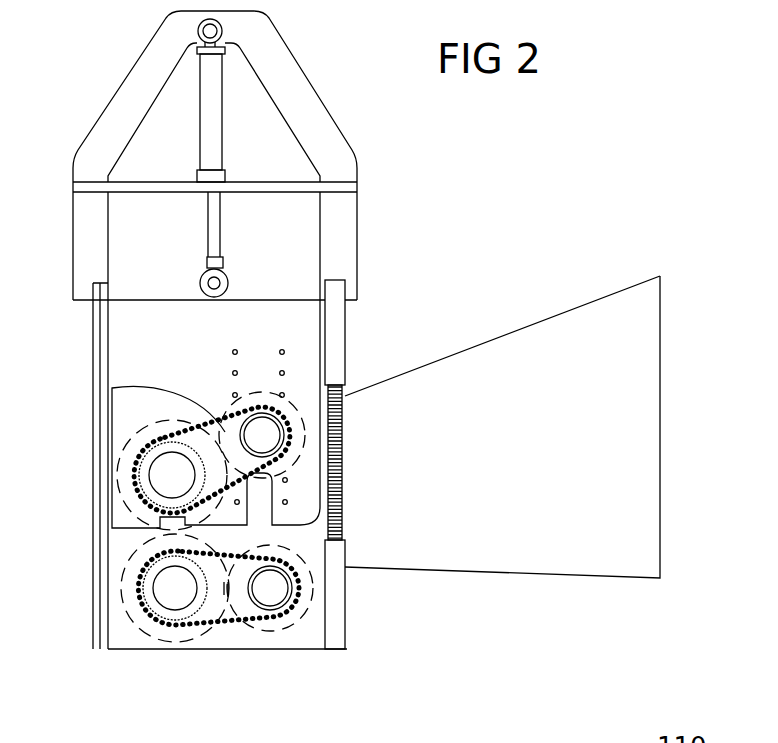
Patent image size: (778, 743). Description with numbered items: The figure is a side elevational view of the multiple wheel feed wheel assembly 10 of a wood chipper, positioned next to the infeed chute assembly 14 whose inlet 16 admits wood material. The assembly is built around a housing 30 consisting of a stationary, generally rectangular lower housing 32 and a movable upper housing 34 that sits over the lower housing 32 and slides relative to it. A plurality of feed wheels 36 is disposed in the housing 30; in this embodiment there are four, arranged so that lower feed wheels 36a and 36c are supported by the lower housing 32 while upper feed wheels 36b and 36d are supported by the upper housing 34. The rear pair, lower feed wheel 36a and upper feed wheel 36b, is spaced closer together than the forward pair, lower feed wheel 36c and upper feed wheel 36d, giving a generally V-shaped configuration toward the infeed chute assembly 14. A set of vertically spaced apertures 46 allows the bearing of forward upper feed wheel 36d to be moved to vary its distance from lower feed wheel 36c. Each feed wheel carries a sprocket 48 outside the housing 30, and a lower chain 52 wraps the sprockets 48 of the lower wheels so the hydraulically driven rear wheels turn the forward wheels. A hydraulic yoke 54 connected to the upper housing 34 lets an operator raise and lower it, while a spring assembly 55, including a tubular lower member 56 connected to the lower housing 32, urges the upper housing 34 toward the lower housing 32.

The multiple wheel feed wheel assembly 10 is at (87, 71).
The infeed chute assembly 14 is at (593, 301).
The inlet 16 is at (660, 447).
The housing 30 is at (246, 289).
The lower housing 32 is at (247, 643).
The upper housing 34 is at (127, 350).
The feed wheels 36 is at (140, 647).
The lower feed wheel 36a is at (120, 570).
The upper feed wheel 36b is at (137, 437).
The lower feed wheel 36c is at (312, 588).
The upper feed wheel 36d is at (293, 413).
The apertures 46 is at (283, 350).
The sprocket 48 is at (140, 390).
The lower chain 52 is at (200, 633).
The hydraulic yoke 54 is at (207, 262).
The spring assembly 55 is at (355, 465).
The lower member 56 is at (338, 617).